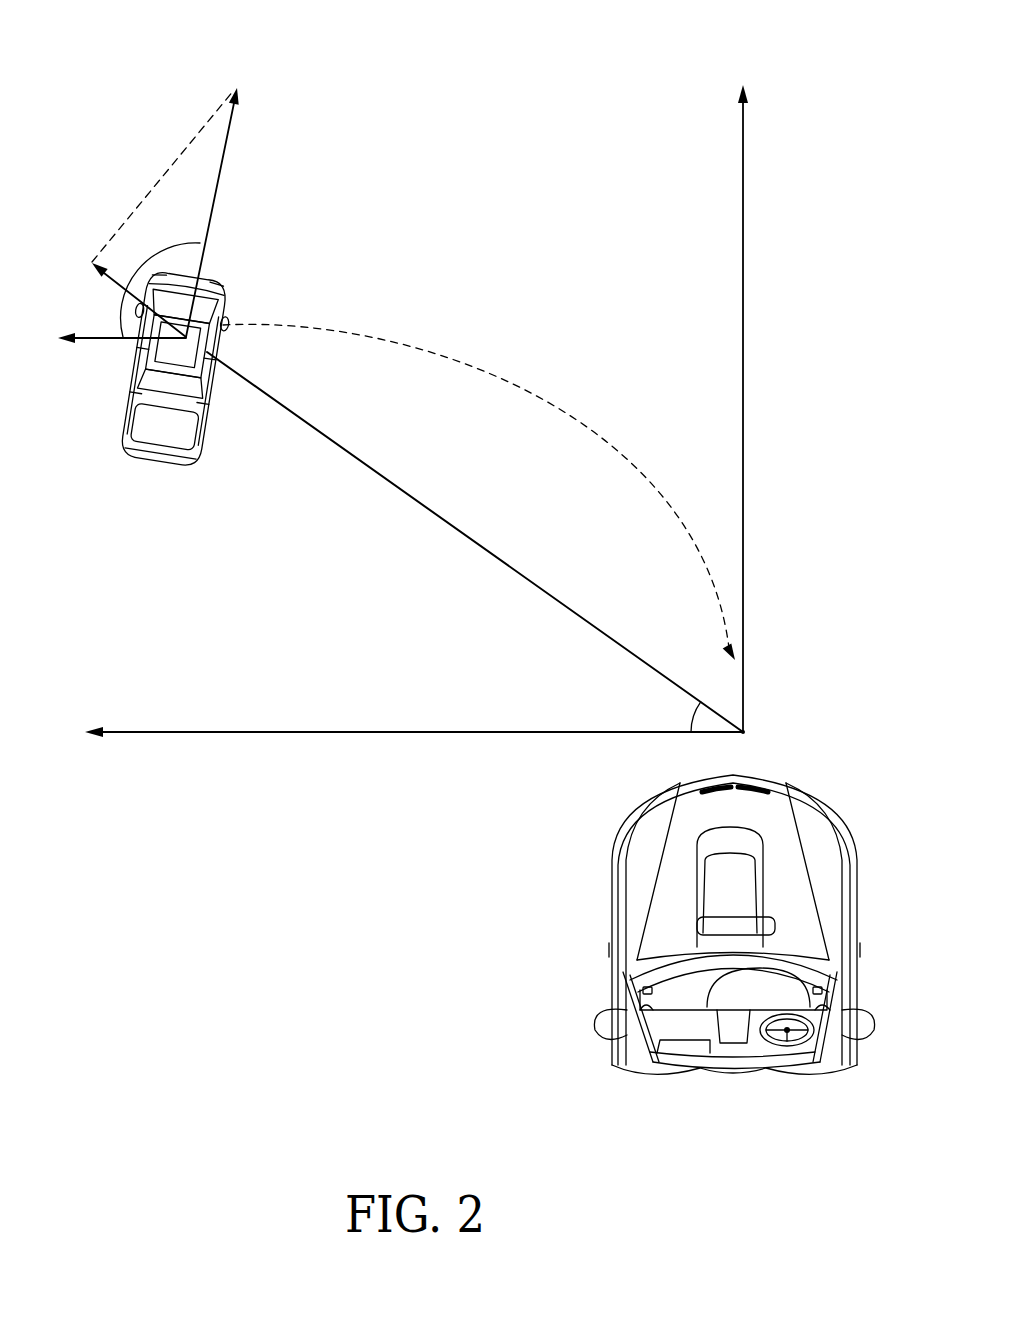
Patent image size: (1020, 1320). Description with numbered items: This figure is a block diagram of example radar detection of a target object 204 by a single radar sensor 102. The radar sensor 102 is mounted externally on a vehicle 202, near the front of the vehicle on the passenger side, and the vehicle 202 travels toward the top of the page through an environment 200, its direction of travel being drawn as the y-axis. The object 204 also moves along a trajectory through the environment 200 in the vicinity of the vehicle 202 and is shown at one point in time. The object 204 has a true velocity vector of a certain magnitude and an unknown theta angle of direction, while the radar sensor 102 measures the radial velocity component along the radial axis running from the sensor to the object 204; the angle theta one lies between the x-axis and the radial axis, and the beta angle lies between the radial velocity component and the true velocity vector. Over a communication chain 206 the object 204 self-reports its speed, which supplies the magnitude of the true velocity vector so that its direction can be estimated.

The environment 200 is at (264, 40).
The target object 204 is at (200, 276).
The communication chain 206 is at (664, 522).
The radar sensor 102 is at (524, 558).
The vehicle 202 is at (612, 915).